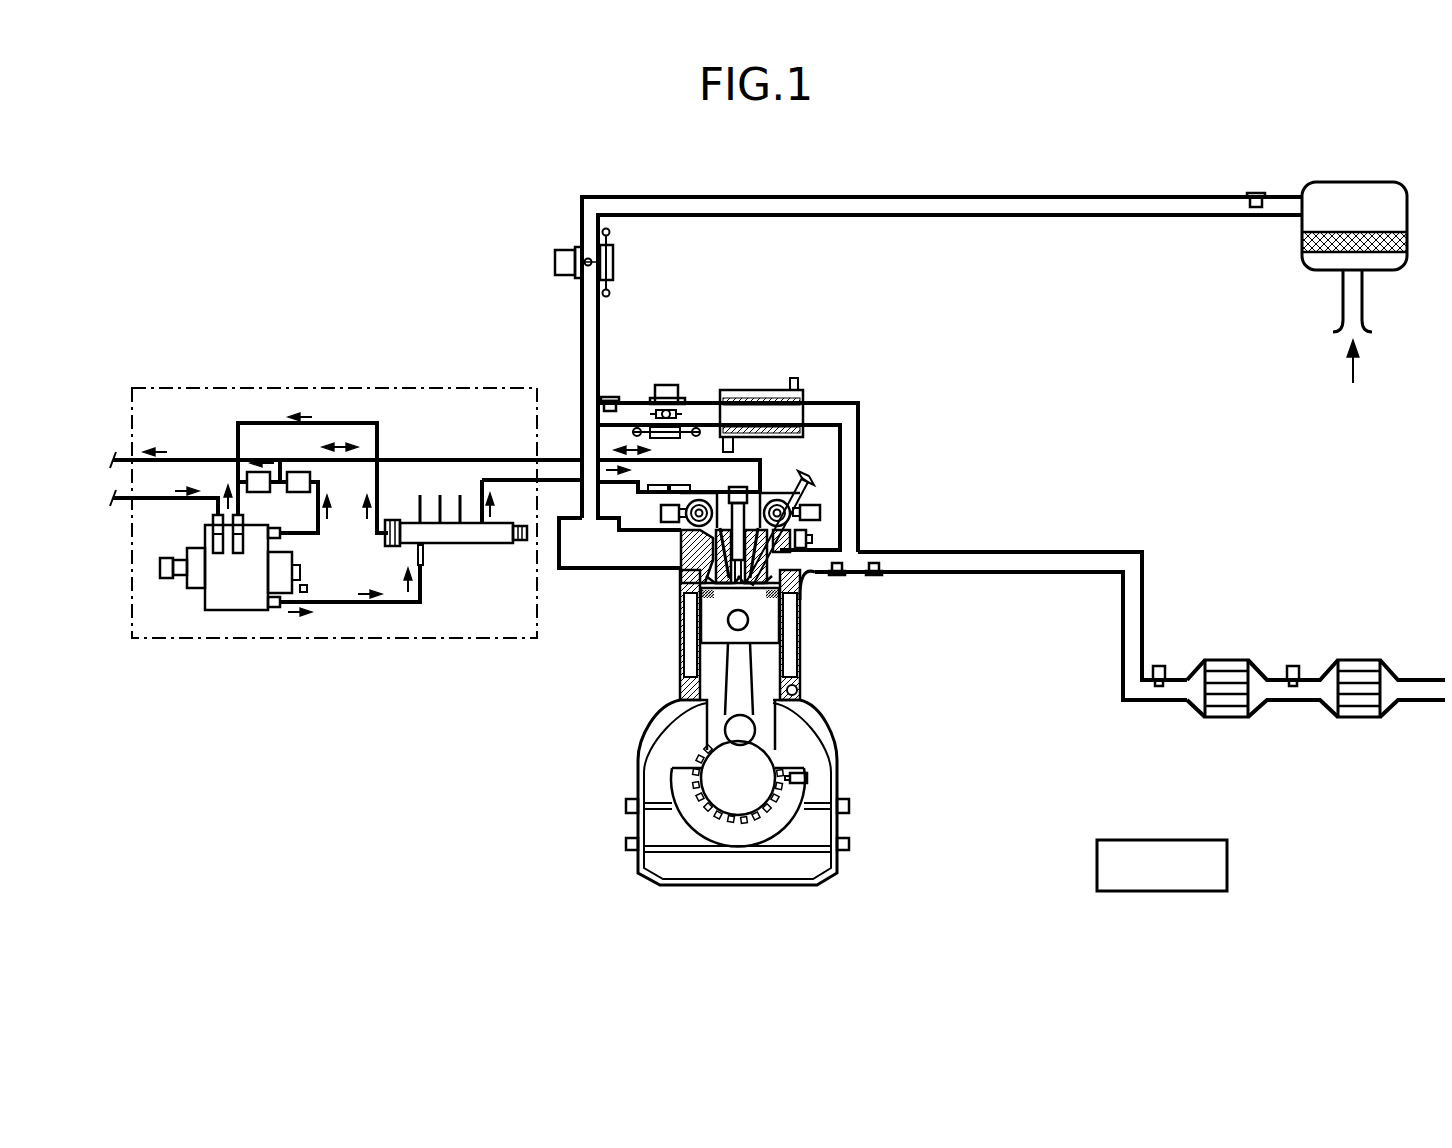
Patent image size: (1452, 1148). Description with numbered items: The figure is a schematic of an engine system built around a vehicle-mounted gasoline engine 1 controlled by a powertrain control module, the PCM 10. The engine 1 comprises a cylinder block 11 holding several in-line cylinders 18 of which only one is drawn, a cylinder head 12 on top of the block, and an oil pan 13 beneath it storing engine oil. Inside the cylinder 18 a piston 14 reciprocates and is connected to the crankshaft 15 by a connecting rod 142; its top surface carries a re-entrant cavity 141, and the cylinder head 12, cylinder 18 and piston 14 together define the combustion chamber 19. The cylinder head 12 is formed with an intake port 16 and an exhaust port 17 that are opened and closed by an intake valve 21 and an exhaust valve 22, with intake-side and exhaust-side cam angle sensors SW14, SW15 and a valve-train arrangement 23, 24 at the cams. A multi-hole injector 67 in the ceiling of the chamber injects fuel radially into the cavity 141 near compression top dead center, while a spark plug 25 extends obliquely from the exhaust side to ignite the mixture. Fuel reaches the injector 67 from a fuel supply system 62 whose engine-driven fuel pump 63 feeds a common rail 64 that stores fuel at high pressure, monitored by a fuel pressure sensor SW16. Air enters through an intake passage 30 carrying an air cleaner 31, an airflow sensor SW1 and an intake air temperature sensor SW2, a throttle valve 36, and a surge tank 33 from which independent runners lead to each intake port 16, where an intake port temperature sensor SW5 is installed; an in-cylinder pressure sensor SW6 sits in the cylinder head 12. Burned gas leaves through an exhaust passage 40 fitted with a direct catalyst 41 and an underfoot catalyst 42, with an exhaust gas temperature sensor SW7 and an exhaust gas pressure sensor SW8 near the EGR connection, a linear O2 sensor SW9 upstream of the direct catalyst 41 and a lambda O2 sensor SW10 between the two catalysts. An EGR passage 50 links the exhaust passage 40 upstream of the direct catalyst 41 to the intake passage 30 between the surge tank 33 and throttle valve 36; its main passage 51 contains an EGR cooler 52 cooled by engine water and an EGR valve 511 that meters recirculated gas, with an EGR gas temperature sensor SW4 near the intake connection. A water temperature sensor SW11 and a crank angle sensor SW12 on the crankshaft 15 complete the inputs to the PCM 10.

The engine 1 is at (396, 208).
The powertrain control module (PCM) 10 is at (1230, 865).
The cylinder block 11 is at (803, 690).
The cylinder head 12 is at (805, 578).
The oil pan 13 is at (837, 865).
The piston 14 is at (707, 675).
The crankshaft 15 is at (738, 800).
The intake port 16 is at (676, 565).
The exhaust port 17 is at (800, 570).
The cylinder 18 is at (712, 705).
The combustion chamber 19 is at (731, 592).
The intake valve 21 is at (713, 592).
The exhaust valve 22 is at (767, 595).
The intake valve timing mechanism 23 is at (661, 509).
The exhaust valve timing mechanism 24 is at (793, 498).
The spark plug 25 is at (813, 487).
The intake passage 30 is at (985, 197).
The air cleaner 31 is at (1377, 182).
The surge tank 33 is at (567, 558).
The throttle valve 36 is at (565, 250).
The exhaust passage 40 is at (1060, 552).
The direct catalyst 41 is at (1226, 660).
The underfoot catalyst 42 is at (1358, 660).
The EGR passage 50 is at (818, 427).
The main passage 51 is at (797, 477).
The EGR cooler 52 is at (775, 390).
The EGR valve 511 is at (658, 385).
The fuel supply system 62 is at (263, 388).
The fuel pump 63 is at (238, 612).
The common rail 64 is at (453, 543).
The injector 67 is at (745, 487).
The cavity 141 is at (797, 652).
The connecting rod 142 is at (705, 742).
The airflow sensor SW1 is at (1255, 163).
The intake air temperature sensor SW2 is at (1255, 193).
The EGR gas temperature sensor SW4 is at (603, 397).
The intake port temperature sensor SW5 is at (703, 587).
The in-cylinder pressure sensor SW6 is at (729, 487).
The exhaust gas temperature sensor SW7 is at (841, 576).
The exhaust gas pressure sensor SW8 is at (877, 575).
The linear O2 sensor SW9 is at (1162, 666).
The lambda O2 sensor SW10 is at (1295, 666).
The water temperature sensor SW11 is at (806, 540).
The crank angle sensor SW12 is at (808, 778).
The intake-side cam angle sensor SW14 is at (663, 523).
The exhaust-side cam angle sensor SW15 is at (820, 512).
The fuel pressure sensor SW16 is at (522, 543).